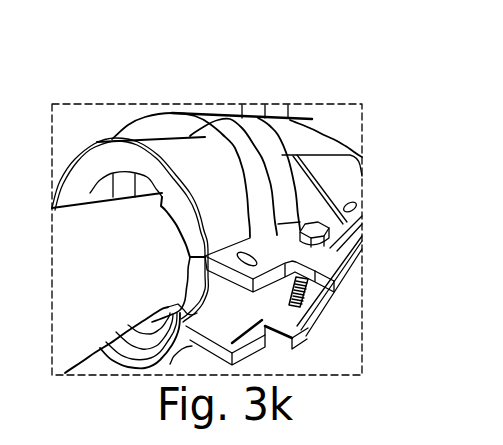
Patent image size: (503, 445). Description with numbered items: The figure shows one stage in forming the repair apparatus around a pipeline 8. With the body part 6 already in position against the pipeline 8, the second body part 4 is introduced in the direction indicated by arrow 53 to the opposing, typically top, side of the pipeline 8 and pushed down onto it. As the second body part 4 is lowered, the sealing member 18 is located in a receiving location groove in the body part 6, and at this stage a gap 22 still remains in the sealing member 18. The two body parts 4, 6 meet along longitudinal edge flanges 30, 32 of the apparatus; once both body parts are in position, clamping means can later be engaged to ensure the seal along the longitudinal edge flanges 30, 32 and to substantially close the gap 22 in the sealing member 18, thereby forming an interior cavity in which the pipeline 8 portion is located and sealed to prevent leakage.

The second body part 4 is at (319, 161).
The body part 6 is at (275, 287).
The pipeline 8 is at (133, 263).
The sealing member 18 is at (110, 183).
The gap 22 is at (142, 222).
The longitudinal edge flange 30 is at (307, 332).
The longitudinal edge flange 32 is at (52, 194).
The arrow 53 is at (273, 80).